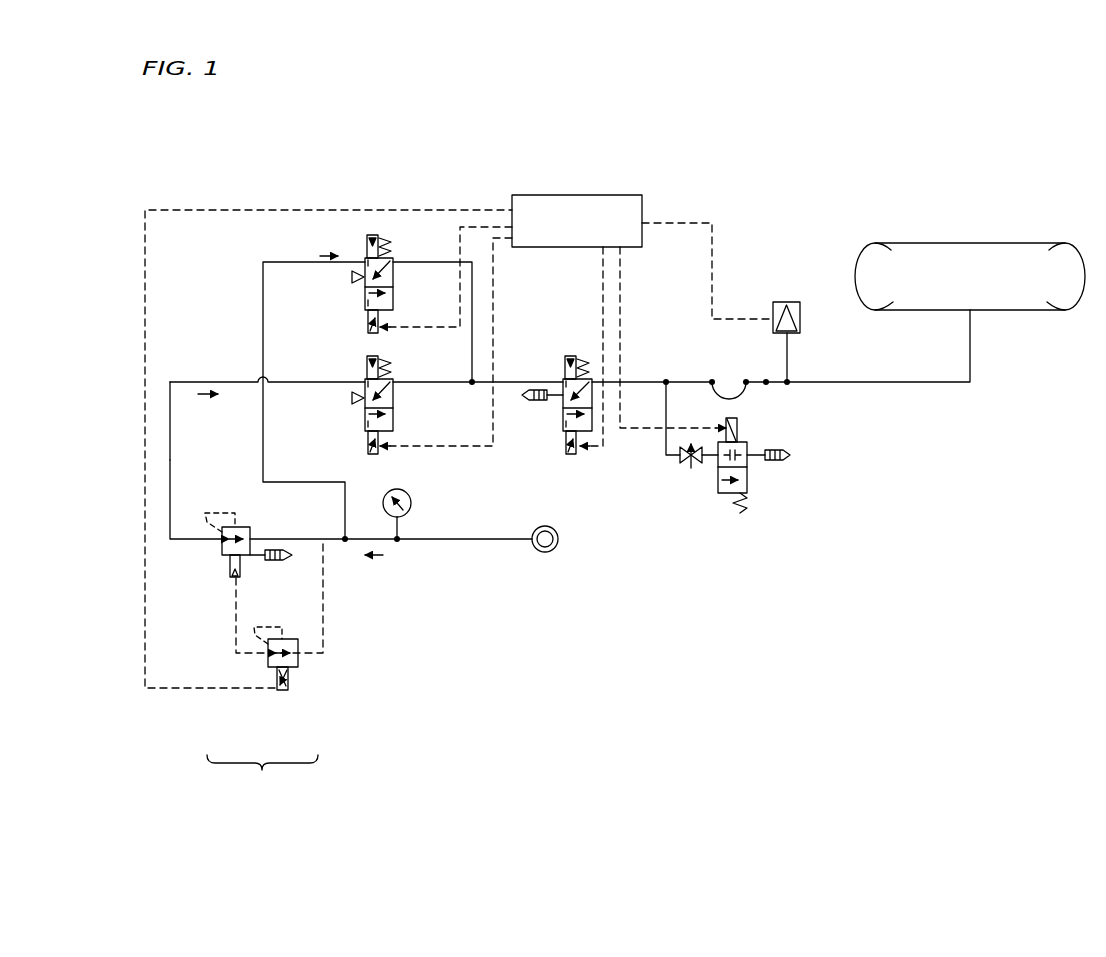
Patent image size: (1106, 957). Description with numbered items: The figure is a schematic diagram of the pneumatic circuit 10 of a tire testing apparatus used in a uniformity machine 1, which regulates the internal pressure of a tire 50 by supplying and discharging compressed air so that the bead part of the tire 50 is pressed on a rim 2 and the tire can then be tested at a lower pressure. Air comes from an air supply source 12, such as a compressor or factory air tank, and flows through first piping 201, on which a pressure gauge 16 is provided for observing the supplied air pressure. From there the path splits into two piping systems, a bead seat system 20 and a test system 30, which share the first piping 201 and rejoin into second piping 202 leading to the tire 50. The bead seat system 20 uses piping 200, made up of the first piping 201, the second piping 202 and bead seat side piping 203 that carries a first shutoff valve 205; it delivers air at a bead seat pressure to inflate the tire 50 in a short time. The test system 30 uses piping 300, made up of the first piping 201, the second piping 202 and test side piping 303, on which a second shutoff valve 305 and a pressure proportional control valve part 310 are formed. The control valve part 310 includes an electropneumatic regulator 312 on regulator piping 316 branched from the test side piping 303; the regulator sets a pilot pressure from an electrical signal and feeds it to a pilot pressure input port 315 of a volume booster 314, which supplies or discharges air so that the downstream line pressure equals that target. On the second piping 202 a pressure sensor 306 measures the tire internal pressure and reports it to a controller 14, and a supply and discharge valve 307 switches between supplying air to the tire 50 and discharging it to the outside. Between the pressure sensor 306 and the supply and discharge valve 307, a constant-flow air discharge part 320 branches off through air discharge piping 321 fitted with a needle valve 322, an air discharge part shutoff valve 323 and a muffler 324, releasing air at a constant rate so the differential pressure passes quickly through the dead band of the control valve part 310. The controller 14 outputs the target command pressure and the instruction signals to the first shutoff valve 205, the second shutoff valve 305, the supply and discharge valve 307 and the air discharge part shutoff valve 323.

The uniformity machine 1 is at (971, 153).
The rim 2 is at (970, 243).
The pneumatic circuit 10 is at (502, 582).
The air supply source 12 is at (558, 530).
The controller 14 is at (578, 194).
The pressure gauge 16 is at (410, 495).
The bead seat system 20 is at (334, 233).
The test system 30 is at (215, 359).
The tire 50 is at (1073, 243).
The piping 200 is at (272, 414).
The first piping 201 is at (478, 537).
The second piping 202 is at (905, 383).
The bead seat side piping 203 is at (263, 335).
The first shutoff valve 205 is at (397, 229).
The piping 300 is at (179, 481).
The test side piping 303 is at (170, 423).
The second shutoff valve 305 is at (352, 361).
The pressure sensor 306 is at (767, 312).
The supply and discharge valve 307 is at (550, 357).
The pressure proportional control valve part 310 is at (262, 772).
The electropneumatic regulator 312 is at (284, 704).
The volume booster 314 is at (220, 572).
The pilot pressure input port 315 is at (242, 568).
The regulator piping 316 is at (323, 578).
The constant-flow air discharge part 320 is at (696, 501).
The air discharge piping 321 is at (666, 405).
The needle valve 322 is at (680, 462).
The air discharge part shutoff valve 323 is at (750, 472).
The muffler 324 is at (775, 450).